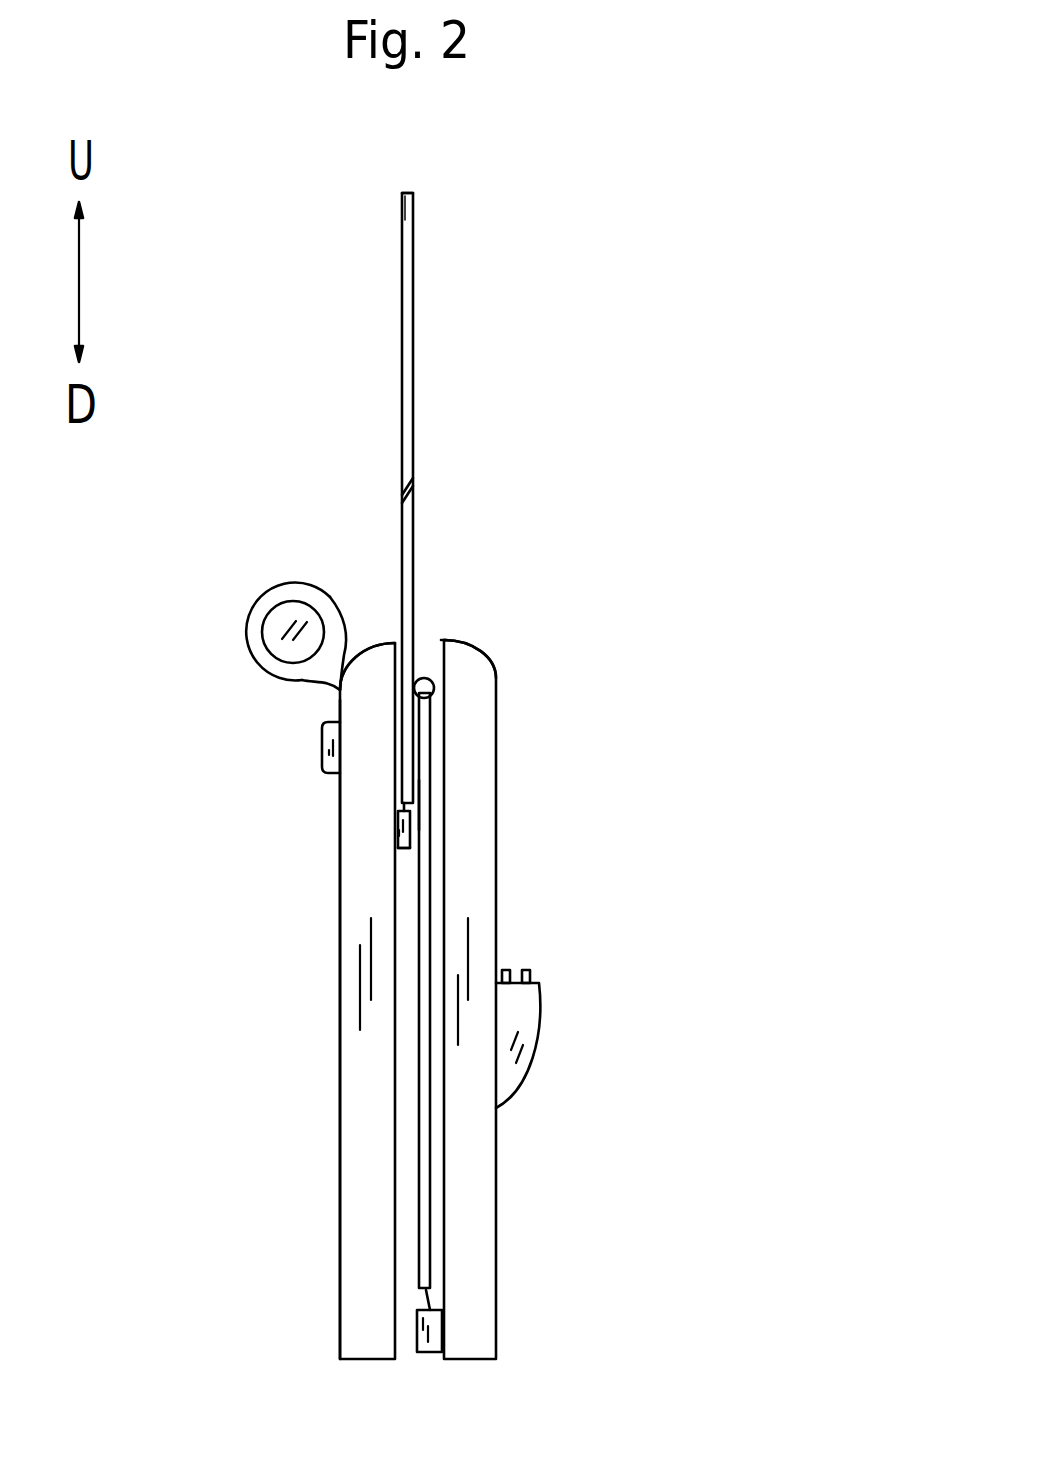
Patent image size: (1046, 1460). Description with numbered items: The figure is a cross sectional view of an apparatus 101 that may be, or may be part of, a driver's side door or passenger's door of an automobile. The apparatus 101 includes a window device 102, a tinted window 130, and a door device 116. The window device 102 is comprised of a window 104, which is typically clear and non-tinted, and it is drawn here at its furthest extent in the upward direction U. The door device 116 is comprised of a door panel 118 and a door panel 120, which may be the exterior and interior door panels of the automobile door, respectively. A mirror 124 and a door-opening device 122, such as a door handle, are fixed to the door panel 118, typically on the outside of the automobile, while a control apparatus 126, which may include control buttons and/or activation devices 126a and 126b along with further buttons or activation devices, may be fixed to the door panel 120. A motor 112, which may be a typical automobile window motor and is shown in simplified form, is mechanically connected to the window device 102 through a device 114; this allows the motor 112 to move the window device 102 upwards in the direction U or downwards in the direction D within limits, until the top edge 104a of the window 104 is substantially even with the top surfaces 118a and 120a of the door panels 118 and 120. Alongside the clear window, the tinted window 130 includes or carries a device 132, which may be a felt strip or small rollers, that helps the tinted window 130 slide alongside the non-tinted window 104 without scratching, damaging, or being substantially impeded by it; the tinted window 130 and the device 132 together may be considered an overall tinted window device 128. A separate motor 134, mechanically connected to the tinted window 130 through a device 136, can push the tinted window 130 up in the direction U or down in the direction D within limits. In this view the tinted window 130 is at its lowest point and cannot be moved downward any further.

The apparatus 101 is at (474, 362).
The window device 102 is at (341, 280).
The window 104 is at (402, 430).
The top edge 104a is at (413, 193).
The motor 112 is at (402, 848).
The device 114 is at (398, 815).
The door device 116 is at (336, 1170).
The door panel 118 is at (350, 1062).
The top surface 118a is at (375, 646).
The door panel 120 is at (487, 897).
The top surface 120a is at (445, 640).
The door-opening device 122 is at (327, 744).
The mirror 124 is at (273, 606).
The control apparatus 126 is at (518, 1018).
The control button or activation device 126a is at (507, 968).
The control button or activation device 126b is at (528, 968).
The tinted window device 128 is at (446, 799).
The tinted window 130 is at (430, 880).
The device 132 is at (430, 680).
The motor 134 is at (437, 1320).
The device 136 is at (427, 1300).